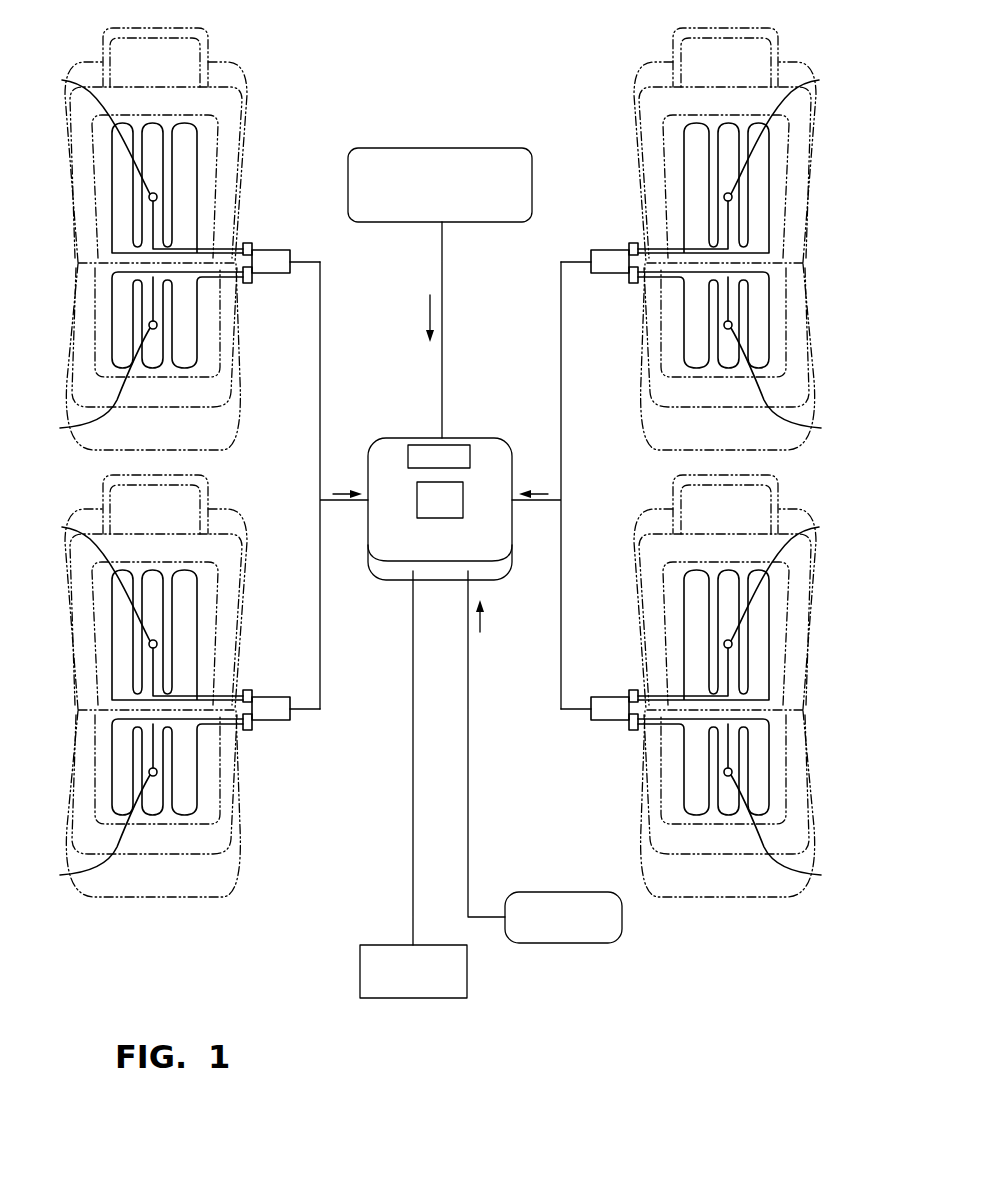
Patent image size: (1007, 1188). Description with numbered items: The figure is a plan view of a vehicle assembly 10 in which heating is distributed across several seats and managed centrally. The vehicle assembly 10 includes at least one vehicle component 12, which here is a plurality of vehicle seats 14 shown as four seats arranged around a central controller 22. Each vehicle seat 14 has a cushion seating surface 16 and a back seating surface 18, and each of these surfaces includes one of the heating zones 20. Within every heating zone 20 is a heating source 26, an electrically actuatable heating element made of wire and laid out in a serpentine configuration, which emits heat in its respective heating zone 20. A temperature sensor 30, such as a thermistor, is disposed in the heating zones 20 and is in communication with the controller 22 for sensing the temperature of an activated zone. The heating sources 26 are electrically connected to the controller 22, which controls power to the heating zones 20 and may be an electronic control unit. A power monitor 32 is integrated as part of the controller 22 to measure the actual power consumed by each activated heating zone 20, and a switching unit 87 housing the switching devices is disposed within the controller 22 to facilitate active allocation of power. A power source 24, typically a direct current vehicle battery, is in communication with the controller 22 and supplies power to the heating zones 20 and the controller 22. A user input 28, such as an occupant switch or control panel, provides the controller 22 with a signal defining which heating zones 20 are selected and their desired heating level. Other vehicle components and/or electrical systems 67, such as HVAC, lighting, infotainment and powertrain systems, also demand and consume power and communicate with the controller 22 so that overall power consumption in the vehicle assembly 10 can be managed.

The vehicle assembly 10 is at (510, 78).
The vehicle component 12 is at (67, 187).
The vehicle seat 14 is at (220, 56).
The cushion seating surface 16 is at (230, 355).
The back seating surface 18 is at (233, 118).
The heating zone 20 is at (98, 117).
The controller 22 is at (464, 438).
The power source 24 is at (375, 998).
The heating source 26 is at (198, 157).
The user input 28 is at (603, 943).
The temperature sensor 30 is at (444, 476).
The power monitor 32 is at (420, 450).
The other vehicle components and/or electrical systems 67 is at (408, 148).
The switching unit 87 is at (465, 498).